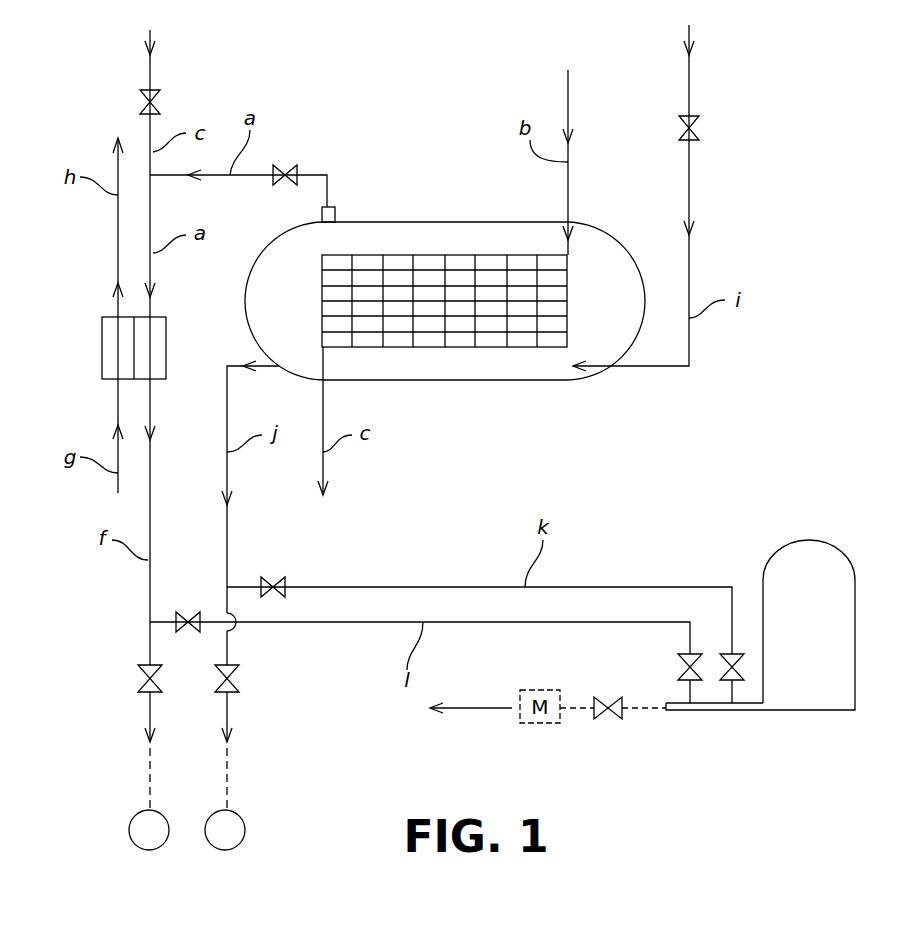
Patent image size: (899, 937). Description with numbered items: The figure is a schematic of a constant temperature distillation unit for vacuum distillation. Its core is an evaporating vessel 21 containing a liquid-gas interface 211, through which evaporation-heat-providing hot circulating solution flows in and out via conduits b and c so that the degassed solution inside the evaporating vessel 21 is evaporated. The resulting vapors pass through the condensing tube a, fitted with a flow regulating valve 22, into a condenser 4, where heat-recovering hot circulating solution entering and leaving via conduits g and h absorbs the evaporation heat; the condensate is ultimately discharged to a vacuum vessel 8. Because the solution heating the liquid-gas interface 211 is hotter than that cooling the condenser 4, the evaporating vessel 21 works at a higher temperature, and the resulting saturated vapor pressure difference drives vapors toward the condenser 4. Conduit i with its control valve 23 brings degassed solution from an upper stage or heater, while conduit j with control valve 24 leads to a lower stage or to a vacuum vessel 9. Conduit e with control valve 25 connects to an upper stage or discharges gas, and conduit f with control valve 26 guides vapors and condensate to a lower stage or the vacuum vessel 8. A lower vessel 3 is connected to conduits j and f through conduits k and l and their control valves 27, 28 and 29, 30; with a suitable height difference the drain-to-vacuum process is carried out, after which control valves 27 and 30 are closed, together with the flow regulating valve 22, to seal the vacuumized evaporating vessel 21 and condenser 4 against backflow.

The lower vessel 3 is at (810, 545).
The condenser 4 is at (108, 317).
The vacuum vessel 8 is at (149, 771).
The vacuum vessel 9 is at (225, 771).
The evaporating vessel 21 is at (600, 228).
The flow regulating valve 22 is at (290, 168).
The control valve 23 is at (680, 125).
The control valve 24 is at (239, 680).
The control valve 25 is at (140, 100).
The control valve 26 is at (138, 678).
The control valve 27 is at (268, 580).
The control valve 28 is at (736, 655).
The control valve 29 is at (678, 668).
The control valve 30 is at (190, 612).
The liquid-gas interface 211 is at (392, 256).